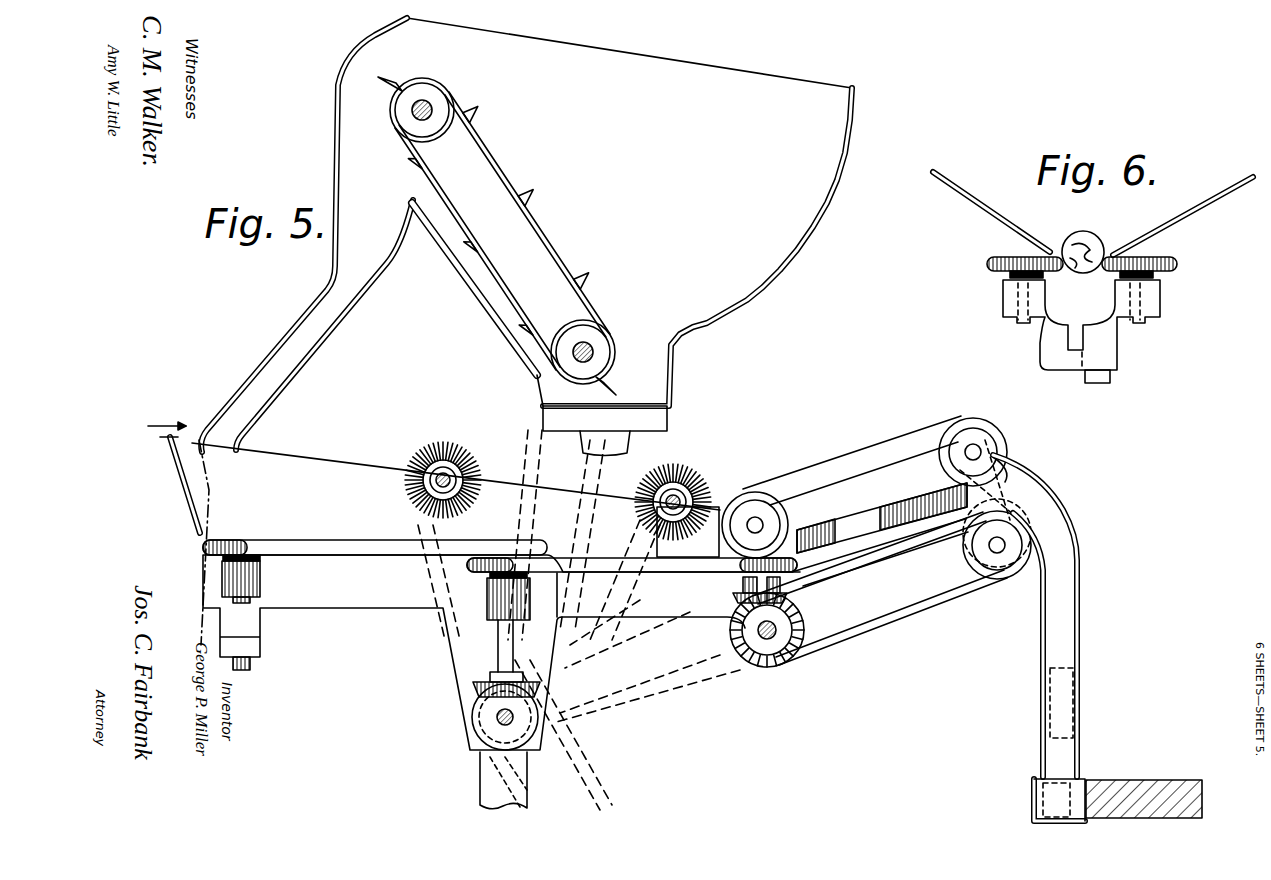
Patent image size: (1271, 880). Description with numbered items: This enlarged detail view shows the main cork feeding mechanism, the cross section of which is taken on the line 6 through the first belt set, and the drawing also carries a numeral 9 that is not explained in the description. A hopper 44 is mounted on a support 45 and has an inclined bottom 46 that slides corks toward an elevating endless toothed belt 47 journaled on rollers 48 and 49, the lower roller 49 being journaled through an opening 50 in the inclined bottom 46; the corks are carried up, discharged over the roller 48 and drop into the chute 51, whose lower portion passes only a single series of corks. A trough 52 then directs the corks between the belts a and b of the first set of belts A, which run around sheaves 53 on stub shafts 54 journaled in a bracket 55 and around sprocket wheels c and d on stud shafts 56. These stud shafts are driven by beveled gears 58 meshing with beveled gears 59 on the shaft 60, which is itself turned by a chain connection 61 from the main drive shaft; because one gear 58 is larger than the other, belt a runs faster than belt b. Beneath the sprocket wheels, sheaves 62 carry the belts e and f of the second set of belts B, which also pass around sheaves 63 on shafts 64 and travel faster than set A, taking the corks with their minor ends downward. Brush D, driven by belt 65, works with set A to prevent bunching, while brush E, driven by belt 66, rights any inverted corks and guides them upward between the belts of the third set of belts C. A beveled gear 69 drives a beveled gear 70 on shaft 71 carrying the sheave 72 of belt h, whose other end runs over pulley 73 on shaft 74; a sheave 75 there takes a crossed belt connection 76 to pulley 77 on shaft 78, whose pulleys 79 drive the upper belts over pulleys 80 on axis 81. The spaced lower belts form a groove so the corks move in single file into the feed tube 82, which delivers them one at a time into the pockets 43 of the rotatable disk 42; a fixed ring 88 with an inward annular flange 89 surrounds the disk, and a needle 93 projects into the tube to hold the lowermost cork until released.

In FIG. 5, the section line 6 is at (178, 532).
In FIG. 5, the belt 9 is at (888, 449).
In FIG. 5, the rotatable disk 42 is at (1128, 783).
In FIG. 5, the pockets 43 is at (1060, 804).
In FIG. 5, the hopper 44 is at (727, 203).
In FIG. 5, the support 45 is at (587, 447).
In FIG. 5, the inclined bottom 46 is at (668, 332).
In FIG. 5, the elevating endless toothed belt 47 is at (557, 247).
In FIG. 5, the roller 48 is at (443, 116).
In FIG. 5, the roller 49 is at (598, 338).
In FIG. 5, the opening 50 is at (605, 388).
In FIG. 5, the chute 51 is at (305, 325).
In FIG. 5, the trough 52 is at (440, 485).
In FIG. 6, the trough 52 is at (1170, 212).
In FIG. 5, the sheave 53 is at (225, 552).
In FIG. 6, the sheave 53 is at (1155, 278).
In FIG. 5, the stub shaft 54 is at (250, 603).
In FIG. 6, the stub shaft 54 is at (1145, 322).
In FIG. 6, the bracket 55 is at (1117, 368).
In FIG. 5, the stud shaft 56 is at (512, 643).
In FIG. 5, the beveled gears 58 is at (478, 688).
In FIG. 5, the beveled gears 59 is at (478, 719).
In FIG. 5, the shaft 60 is at (503, 722).
In FIG. 5, the chain connection 61 is at (596, 789).
In FIG. 5, the sheave 62 is at (487, 575).
In FIG. 5, the sheaves 63 is at (800, 593).
In FIG. 5, the shafts 64 is at (735, 607).
In FIG. 5, the belt 65 is at (420, 520).
In FIG. 5, the belt 66 is at (635, 512).
In FIG. 5, the beveled gear 69 is at (740, 597).
In FIG. 5, the beveled gear 70 is at (745, 634).
In FIG. 5, the shaft 71 is at (772, 640).
In FIG. 5, the sheave 72 is at (753, 690).
In FIG. 5, the pulley 73 is at (998, 580).
In FIG. 5, the shaft 74 is at (994, 553).
In FIG. 5, the sheave 75 is at (1046, 578).
In FIG. 5, the crossed belt connection 76 is at (1006, 483).
In FIG. 5, the pulley 77 is at (1010, 452).
In FIG. 5, the shaft 78 is at (975, 444).
In FIG. 5, the pulleys 79 is at (1002, 448).
In FIG. 5, the pulleys 80 is at (742, 500).
In FIG. 5, the axis 81 is at (757, 517).
In FIG. 5, the feed tube 82 is at (1068, 531).
In FIG. 5, the fixed ring 88 is at (1032, 787).
In FIG. 5, the annular flange 89 is at (1034, 822).
In FIG. 5, the needle 93 is at (1055, 723).
In FIG. 5, the first set of belts A is at (501, 645).
In FIG. 5, the second set of belts B is at (653, 600).
In FIG. 5, the third set of belts C is at (852, 460).
In FIG. 5, the brush D is at (443, 474).
In FIG. 5, the brush E is at (673, 497).
In FIG. 6, the belt a is at (1000, 258).
In FIG. 5, the belt b is at (288, 562).
In FIG. 6, the belt b is at (1170, 259).
In FIG. 5, the sprocket wheel c is at (510, 522).
In FIG. 5, the sprocket wheel d is at (530, 522).
In FIG. 5, the belt e is at (651, 586).
In FIG. 5, the belt f is at (670, 586).
In FIG. 5, the belt h is at (895, 621).